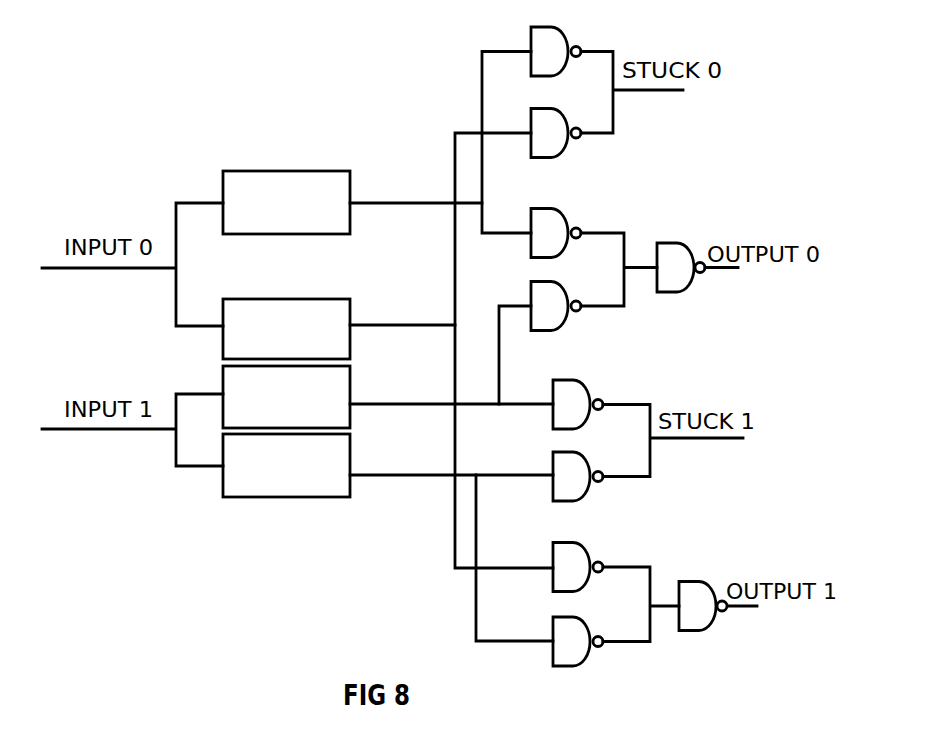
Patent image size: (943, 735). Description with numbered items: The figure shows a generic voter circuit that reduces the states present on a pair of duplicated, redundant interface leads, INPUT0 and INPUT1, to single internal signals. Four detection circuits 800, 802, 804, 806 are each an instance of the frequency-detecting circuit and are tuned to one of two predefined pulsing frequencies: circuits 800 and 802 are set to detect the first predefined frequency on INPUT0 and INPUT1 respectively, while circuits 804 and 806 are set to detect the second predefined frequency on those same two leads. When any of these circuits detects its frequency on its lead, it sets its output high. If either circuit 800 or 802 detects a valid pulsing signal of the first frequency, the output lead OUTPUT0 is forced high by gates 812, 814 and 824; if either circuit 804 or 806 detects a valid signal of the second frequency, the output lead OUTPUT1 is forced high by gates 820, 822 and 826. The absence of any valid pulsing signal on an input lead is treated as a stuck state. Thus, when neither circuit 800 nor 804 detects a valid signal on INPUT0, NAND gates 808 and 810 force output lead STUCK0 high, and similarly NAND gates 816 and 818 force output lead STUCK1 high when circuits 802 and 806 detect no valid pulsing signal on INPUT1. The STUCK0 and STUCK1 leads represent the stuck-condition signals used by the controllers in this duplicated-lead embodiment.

The detect circuit 800 is at (286, 202).
The detect circuit 802 is at (286, 397).
The detect circuit 804 is at (286, 329).
The detect circuit 806 is at (286, 465).
The NAND gate 808 is at (562, 32).
The NAND gate 810 is at (560, 155).
The gate 812 is at (562, 208).
The gate 814 is at (560, 332).
The NAND gate 816 is at (578, 378).
The NAND gate 818 is at (580, 498).
The gate 820 is at (582, 545).
The gate 822 is at (580, 664).
The gate 824 is at (682, 243).
The gate 826 is at (707, 582).